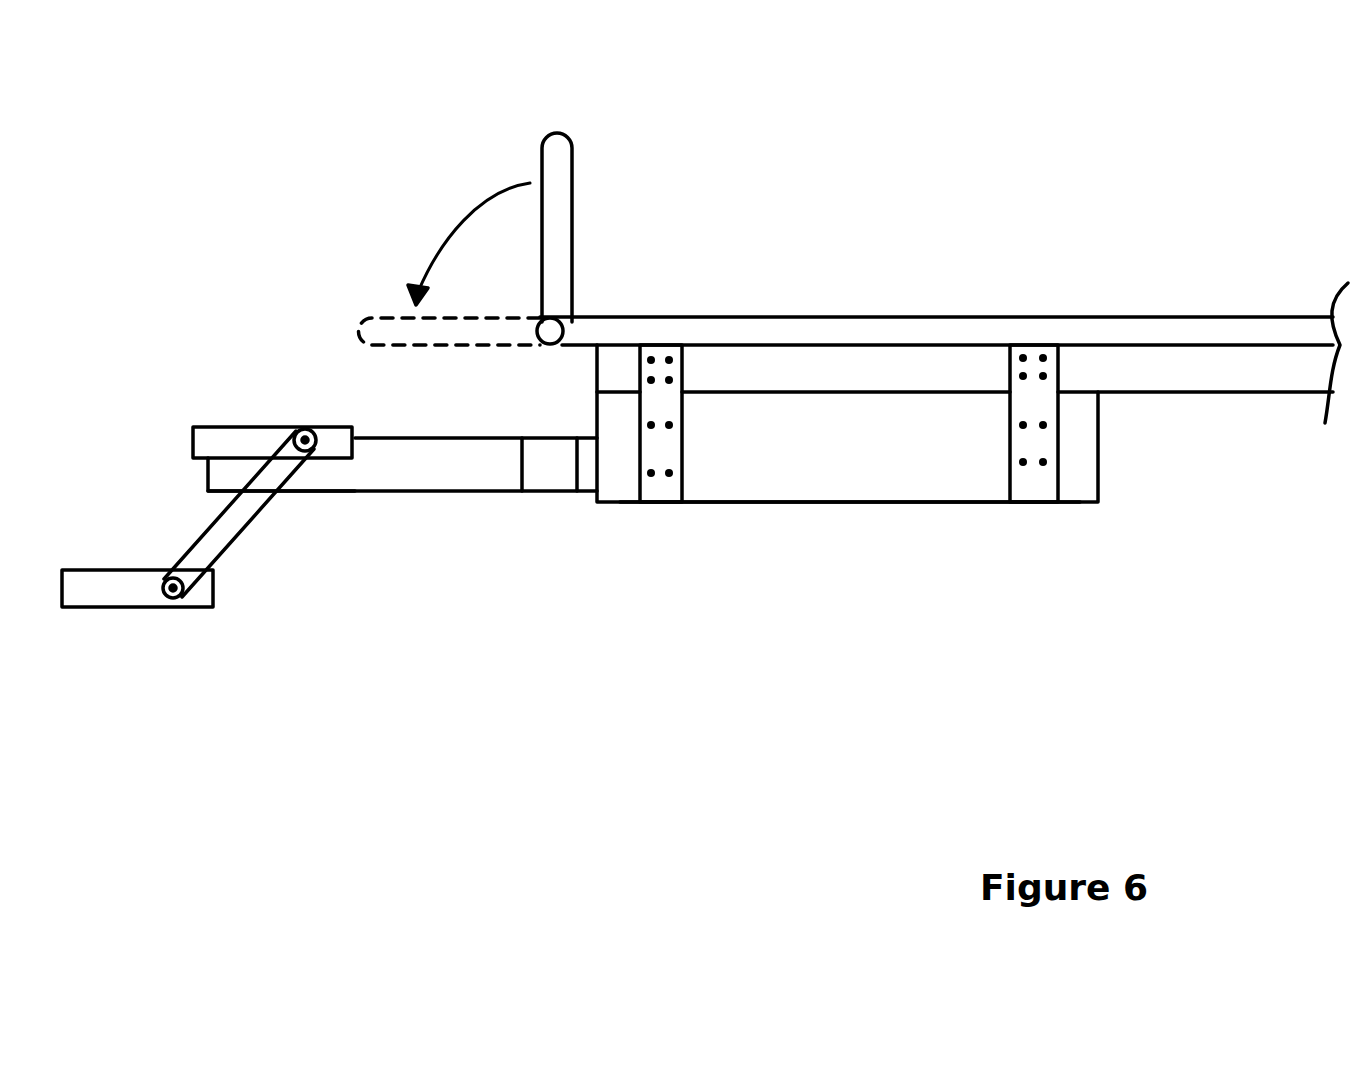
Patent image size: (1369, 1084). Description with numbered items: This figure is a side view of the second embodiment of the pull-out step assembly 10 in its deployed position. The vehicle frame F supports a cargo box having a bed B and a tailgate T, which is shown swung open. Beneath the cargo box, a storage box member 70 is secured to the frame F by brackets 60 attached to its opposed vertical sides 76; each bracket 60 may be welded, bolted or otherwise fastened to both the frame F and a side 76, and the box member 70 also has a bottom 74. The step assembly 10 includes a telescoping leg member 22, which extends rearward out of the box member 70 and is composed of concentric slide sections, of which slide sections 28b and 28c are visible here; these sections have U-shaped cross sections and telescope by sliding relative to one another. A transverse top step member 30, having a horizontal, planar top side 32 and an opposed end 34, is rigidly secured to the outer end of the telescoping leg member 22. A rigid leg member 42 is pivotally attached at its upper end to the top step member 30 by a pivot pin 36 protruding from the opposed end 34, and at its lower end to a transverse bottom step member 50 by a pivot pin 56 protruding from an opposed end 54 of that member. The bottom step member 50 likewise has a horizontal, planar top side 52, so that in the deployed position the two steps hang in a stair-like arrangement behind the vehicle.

The pull-out step assembly 10 is at (551, 744).
The telescoping leg member 22 is at (476, 510).
The concentric slide section 28b is at (553, 480).
The concentric slide section 28c is at (372, 472).
The transverse top step member 30 is at (248, 393).
The top side 32 is at (277, 414).
The opposed end 34 is at (248, 445).
The pivot pin 36 is at (312, 430).
The rigid leg member 42 is at (232, 525).
The transverse bottom step member 50 is at (137, 621).
The top side 52 is at (98, 568).
The opposed end 54 is at (151, 549).
The pivot pin 56 is at (170, 600).
The bracket 60 is at (638, 456).
The storage box member 70 is at (718, 512).
The bottom 74 is at (912, 505).
The side 76 is at (872, 481).
The bed B is at (775, 330).
The vehicle frame F is at (1190, 368).
The tailgate T is at (556, 226).